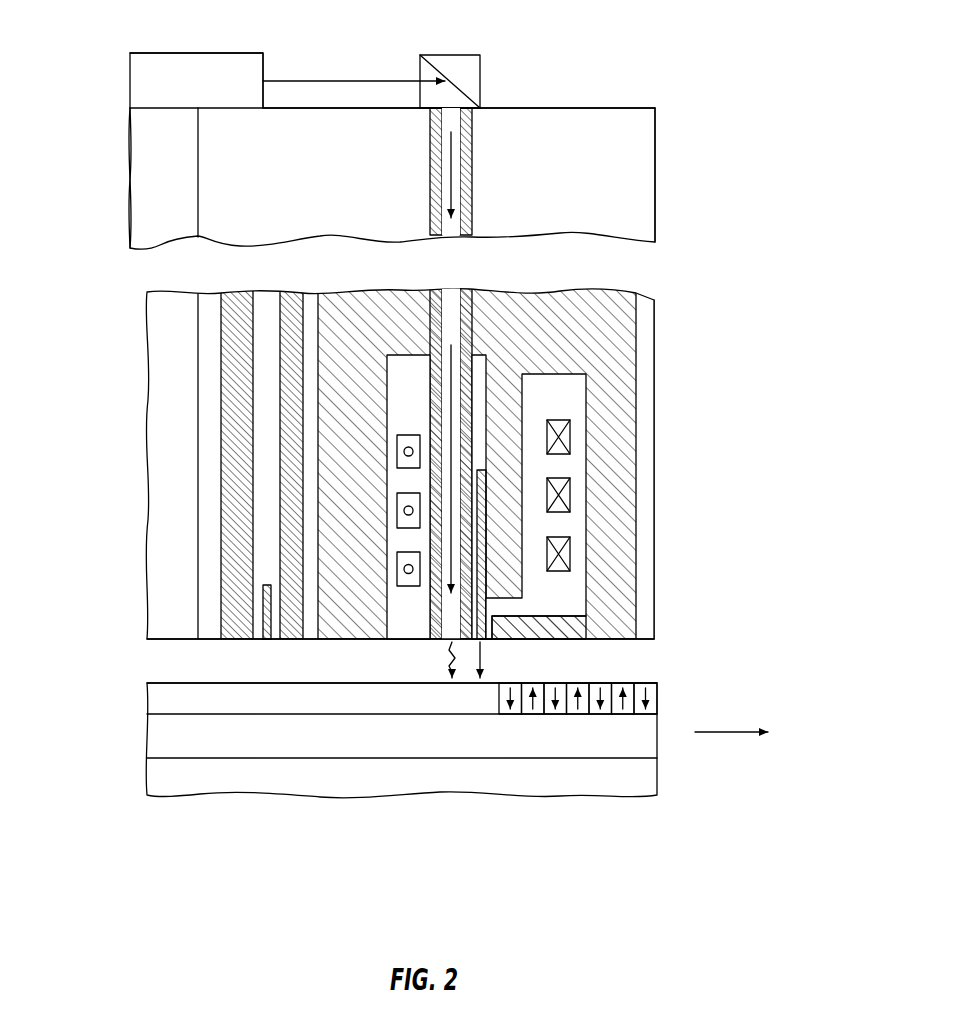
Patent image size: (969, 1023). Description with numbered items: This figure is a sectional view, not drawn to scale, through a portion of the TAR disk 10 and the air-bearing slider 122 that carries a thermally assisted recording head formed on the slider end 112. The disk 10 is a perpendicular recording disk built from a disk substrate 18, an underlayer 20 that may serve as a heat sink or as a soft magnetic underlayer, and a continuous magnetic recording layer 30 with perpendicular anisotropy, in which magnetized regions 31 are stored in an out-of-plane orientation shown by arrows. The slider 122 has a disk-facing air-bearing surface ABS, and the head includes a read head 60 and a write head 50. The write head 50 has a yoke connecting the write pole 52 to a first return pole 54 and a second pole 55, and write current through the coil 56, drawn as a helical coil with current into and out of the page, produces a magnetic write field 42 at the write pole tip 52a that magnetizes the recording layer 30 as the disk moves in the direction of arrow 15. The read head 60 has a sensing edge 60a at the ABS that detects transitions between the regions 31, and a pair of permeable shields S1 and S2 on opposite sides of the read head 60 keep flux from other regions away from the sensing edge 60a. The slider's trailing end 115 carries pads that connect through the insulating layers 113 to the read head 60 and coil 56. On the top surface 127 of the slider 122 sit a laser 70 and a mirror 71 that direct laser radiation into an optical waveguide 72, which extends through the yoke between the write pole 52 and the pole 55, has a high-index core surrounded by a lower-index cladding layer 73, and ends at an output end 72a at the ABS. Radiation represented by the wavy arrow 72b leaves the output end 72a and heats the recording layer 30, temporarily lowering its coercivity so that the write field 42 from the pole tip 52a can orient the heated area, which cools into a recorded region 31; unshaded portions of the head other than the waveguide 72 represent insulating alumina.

The TAR disk 10 is at (140, 842).
The direction of disk motion arrow 15 is at (740, 731).
The disk substrate 18 is at (155, 780).
The underlayer 20 is at (155, 738).
The magnetic recording layer 30 is at (155, 700).
The magnetized regions 31 is at (660, 692).
The magnetic write field 42 is at (462, 672).
The write head 50 is at (713, 300).
The write pole 52 is at (492, 607).
The write pole tip 52a is at (485, 640).
The first return pole 54 is at (578, 630).
The second pole 55 is at (348, 630).
The write coil 56 is at (393, 438).
The read head 60 is at (262, 603).
The sensing edge 60a is at (265, 642).
The laser 70 is at (172, 53).
The mirror 71 is at (485, 72).
The optical waveguide 72 is at (462, 181).
The waveguide output end 72a is at (447, 650).
The radiation 72b is at (445, 672).
The cladding layer 73 is at (437, 292).
The slider end 112 is at (198, 213).
The insulating layers 113 is at (643, 134).
The trailing end 115 is at (657, 185).
The air-bearing slider 122 is at (148, 153).
The top surface 127 is at (618, 108).
The first magnetic shield S1 is at (238, 292).
The second magnetic shield S2 is at (293, 292).
The air-bearing surface ABS is at (162, 640).